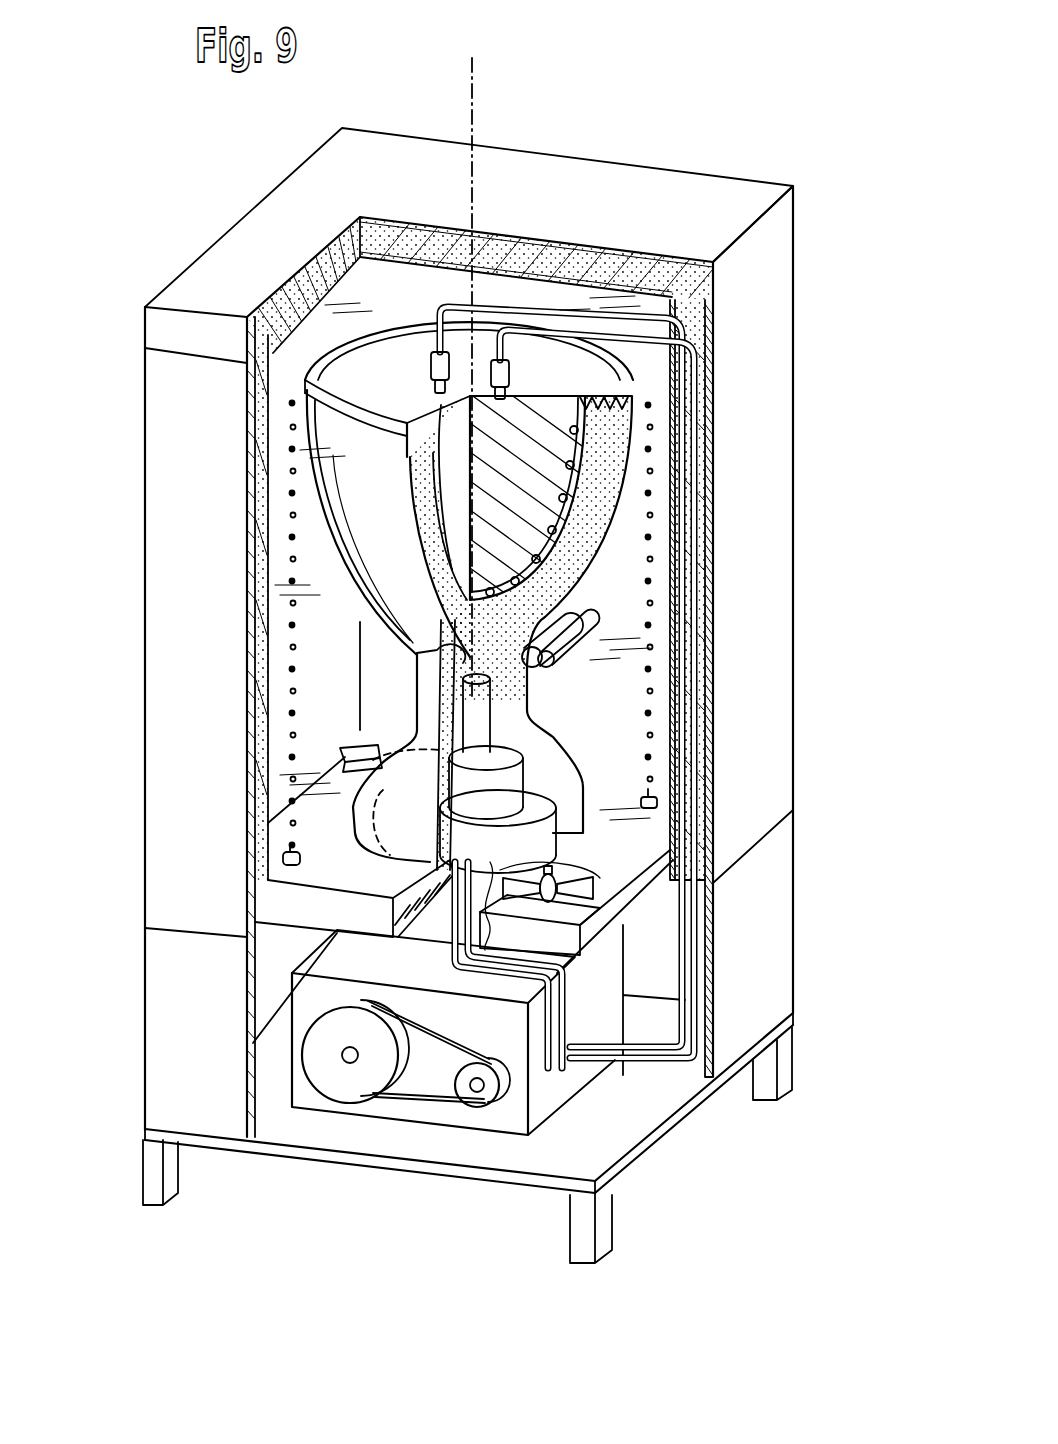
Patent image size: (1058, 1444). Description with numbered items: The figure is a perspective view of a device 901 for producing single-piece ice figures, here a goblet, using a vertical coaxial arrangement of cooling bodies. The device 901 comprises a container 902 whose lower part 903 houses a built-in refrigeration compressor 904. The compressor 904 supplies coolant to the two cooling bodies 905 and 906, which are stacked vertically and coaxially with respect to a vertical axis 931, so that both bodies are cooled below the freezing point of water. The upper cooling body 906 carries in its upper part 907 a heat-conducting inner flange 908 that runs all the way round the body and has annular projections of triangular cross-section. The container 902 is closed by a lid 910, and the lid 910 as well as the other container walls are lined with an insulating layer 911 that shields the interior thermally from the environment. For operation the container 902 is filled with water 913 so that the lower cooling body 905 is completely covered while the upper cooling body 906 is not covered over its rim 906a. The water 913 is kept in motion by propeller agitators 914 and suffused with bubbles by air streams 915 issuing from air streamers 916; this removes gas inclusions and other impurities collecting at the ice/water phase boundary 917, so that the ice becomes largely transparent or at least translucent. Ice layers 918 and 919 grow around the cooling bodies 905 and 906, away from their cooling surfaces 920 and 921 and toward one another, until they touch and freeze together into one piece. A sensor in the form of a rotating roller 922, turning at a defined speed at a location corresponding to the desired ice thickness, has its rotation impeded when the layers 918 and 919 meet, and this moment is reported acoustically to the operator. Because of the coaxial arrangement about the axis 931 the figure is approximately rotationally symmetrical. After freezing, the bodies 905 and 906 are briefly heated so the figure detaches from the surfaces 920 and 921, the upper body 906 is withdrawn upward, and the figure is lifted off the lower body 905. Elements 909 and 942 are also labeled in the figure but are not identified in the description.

The device for producing single-piece ice figures 901 is at (690, 124).
The container 902 is at (798, 709).
The lower part 903 is at (143, 1035).
The refrigeration compressor 904 is at (432, 1120).
The cooling body 905 is at (490, 716).
The cooling body 906 is at (560, 517).
The rim 906a is at (390, 430).
The upper part 907 is at (560, 472).
The inner flange 908 is at (637, 390).
The spray nozzle 909 is at (580, 410).
The lid 910 is at (780, 216).
The insulating layer 911 is at (713, 290).
The water 913 is at (287, 590).
The propeller agitators 914 is at (342, 757).
The air streams 915 is at (284, 706).
The air streamers 916 is at (283, 858).
The ice/water phase boundary 917 is at (382, 632).
The ice layer 918 is at (555, 775).
The ice layer 919 is at (420, 560).
The cooling surface 920 is at (453, 660).
The cooling surface 921 is at (556, 600).
The sensor (rotating roller) 922 is at (533, 660).
The vertical axis 931 is at (473, 80).
The sieve edge 942 is at (560, 452).